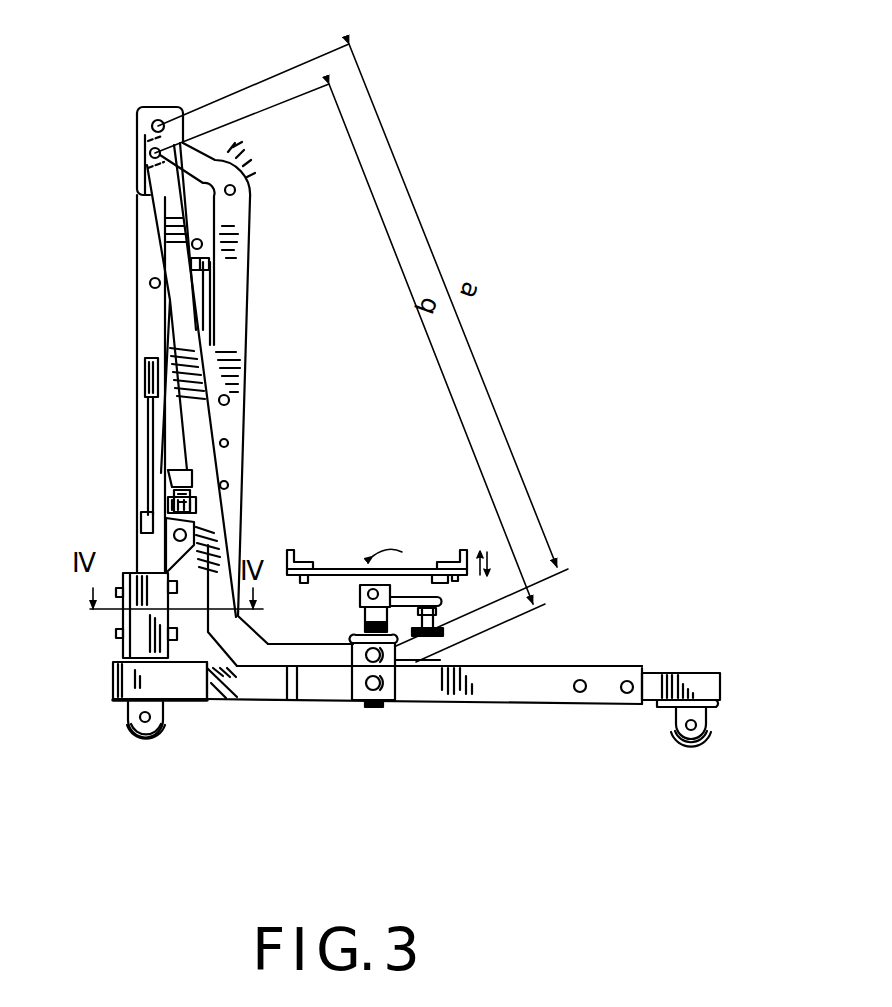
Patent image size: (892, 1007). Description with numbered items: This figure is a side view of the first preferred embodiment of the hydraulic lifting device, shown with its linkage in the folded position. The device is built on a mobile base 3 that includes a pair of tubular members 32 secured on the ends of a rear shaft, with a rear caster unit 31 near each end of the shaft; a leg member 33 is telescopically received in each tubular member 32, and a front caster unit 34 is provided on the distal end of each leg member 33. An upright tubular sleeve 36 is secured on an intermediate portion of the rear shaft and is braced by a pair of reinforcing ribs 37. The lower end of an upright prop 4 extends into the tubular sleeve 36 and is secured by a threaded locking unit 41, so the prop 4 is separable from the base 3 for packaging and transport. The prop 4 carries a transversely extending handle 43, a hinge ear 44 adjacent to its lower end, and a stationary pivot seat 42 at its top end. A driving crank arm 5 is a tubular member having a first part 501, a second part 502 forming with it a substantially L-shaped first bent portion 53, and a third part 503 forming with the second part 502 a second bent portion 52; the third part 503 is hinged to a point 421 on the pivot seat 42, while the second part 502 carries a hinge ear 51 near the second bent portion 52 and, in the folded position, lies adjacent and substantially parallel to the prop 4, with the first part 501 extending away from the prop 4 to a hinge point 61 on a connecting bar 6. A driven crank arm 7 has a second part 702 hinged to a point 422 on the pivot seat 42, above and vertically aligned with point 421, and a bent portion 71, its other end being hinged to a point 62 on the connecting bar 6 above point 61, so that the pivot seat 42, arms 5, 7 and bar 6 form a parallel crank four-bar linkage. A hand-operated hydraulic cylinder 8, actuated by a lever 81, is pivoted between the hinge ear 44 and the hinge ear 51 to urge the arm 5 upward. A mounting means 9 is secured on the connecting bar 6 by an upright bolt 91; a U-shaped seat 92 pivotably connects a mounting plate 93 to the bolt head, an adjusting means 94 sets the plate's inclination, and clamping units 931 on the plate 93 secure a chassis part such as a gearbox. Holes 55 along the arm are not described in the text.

The mobile base 3 is at (582, 663).
The rear caster unit 31 is at (145, 738).
The tubular member 32 is at (560, 694).
The leg member 33 is at (682, 673).
The front caster unit 34 is at (690, 746).
The upright tubular sleeve 36 is at (122, 646).
The reinforcing rib 37 is at (193, 660).
The upright prop 4 is at (150, 323).
The threaded locking unit 41 is at (121, 580).
The stationary pivot seat 42 is at (150, 128).
The hinge point 421 is at (150, 165).
The hinge point 422 is at (150, 108).
The handle 43 is at (150, 281).
The hinge ear 44 is at (140, 518).
The driving crank arm 5 is at (217, 173).
The first part 501 is at (235, 693).
The second part 502 is at (227, 273).
The third part 503 is at (205, 167).
The hinge ear 51 is at (220, 230).
The second bent portion 52 is at (237, 188).
The first bent portion 53 is at (222, 674).
The adjusting holes 55 is at (228, 442).
The connecting bar 6 is at (397, 667).
The hinge point 61 is at (375, 702).
The hinge point 62 is at (397, 670).
The driven crank arm 7 is at (167, 218).
The second part 702 is at (180, 350).
The bent portion 71 is at (244, 648).
The hydraulic cylinder 8 is at (197, 297).
The lever 81 is at (150, 418).
The mounting means 9 is at (437, 558).
The upright bolt 91 is at (358, 638).
The U-shaped seat 92 is at (392, 575).
The mounting plate 93 is at (345, 568).
The clamping unit 931 is at (292, 558).
The adjusting means 94 is at (445, 635).